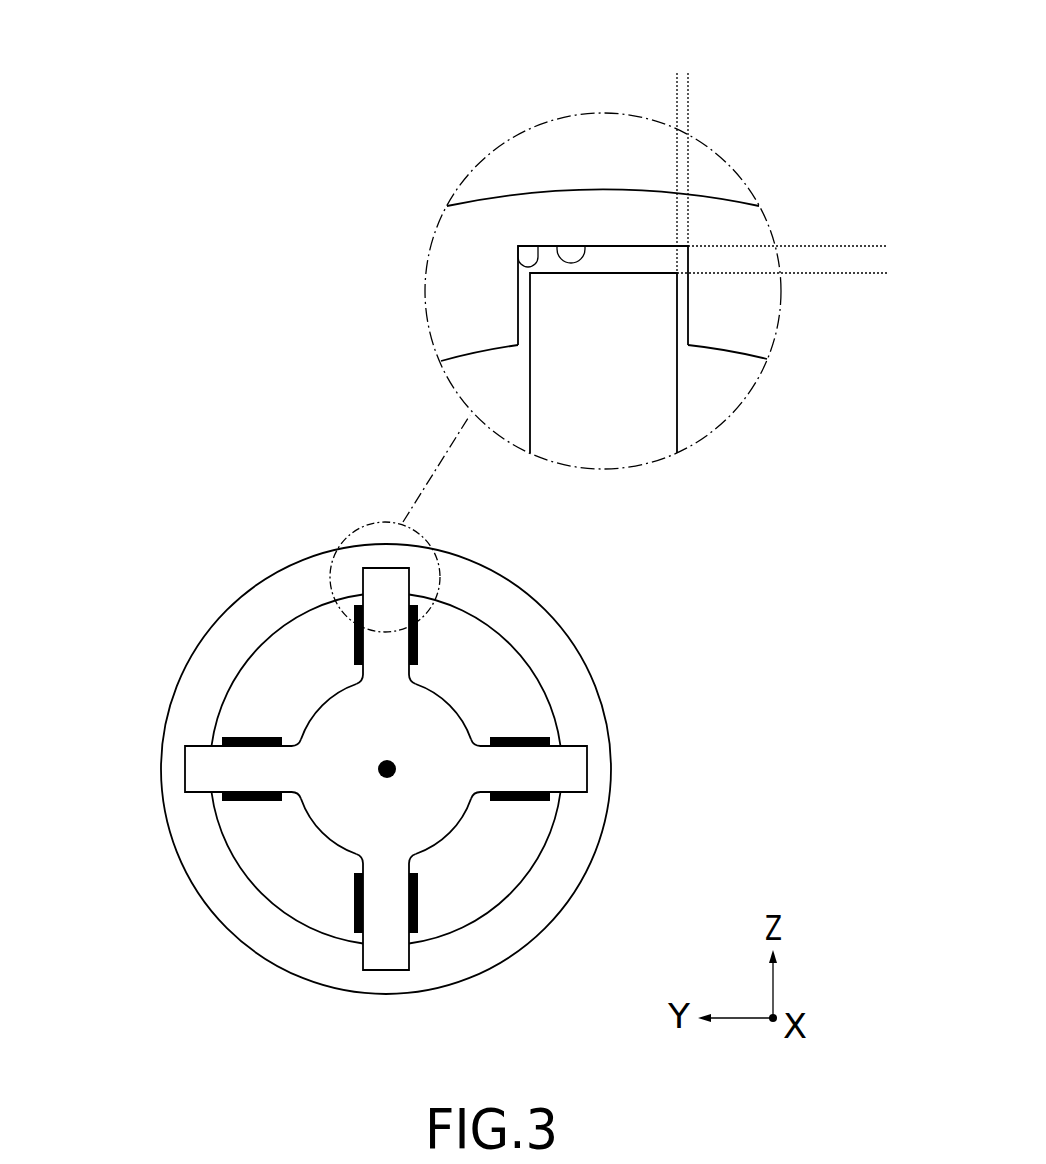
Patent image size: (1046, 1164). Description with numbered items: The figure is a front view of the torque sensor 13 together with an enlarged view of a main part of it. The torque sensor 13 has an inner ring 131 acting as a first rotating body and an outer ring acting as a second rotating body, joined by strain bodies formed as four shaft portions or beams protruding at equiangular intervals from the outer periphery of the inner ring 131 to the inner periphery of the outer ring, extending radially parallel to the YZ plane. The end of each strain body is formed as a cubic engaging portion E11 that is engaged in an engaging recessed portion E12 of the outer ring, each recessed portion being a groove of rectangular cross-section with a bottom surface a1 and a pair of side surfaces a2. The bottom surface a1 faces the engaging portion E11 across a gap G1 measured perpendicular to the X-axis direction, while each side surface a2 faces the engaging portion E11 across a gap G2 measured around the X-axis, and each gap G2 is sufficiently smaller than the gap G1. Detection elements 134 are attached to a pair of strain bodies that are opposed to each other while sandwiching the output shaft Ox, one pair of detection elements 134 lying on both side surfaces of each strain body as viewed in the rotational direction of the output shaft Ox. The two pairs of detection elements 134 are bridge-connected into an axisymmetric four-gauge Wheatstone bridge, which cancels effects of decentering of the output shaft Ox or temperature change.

The torque sensor 13 is at (278, 528).
The inner ring 131 is at (432, 831).
The detection element 134 is at (223, 741).
The engaging portion E11 is at (618, 280).
The engaging recessed portion E12 is at (516, 141).
The bottom surface a1 is at (586, 242).
The side surface a2 is at (537, 250).
The gap G1 is at (877, 202).
The gap G2 is at (632, 87).
The output shaft Ox is at (390, 758).